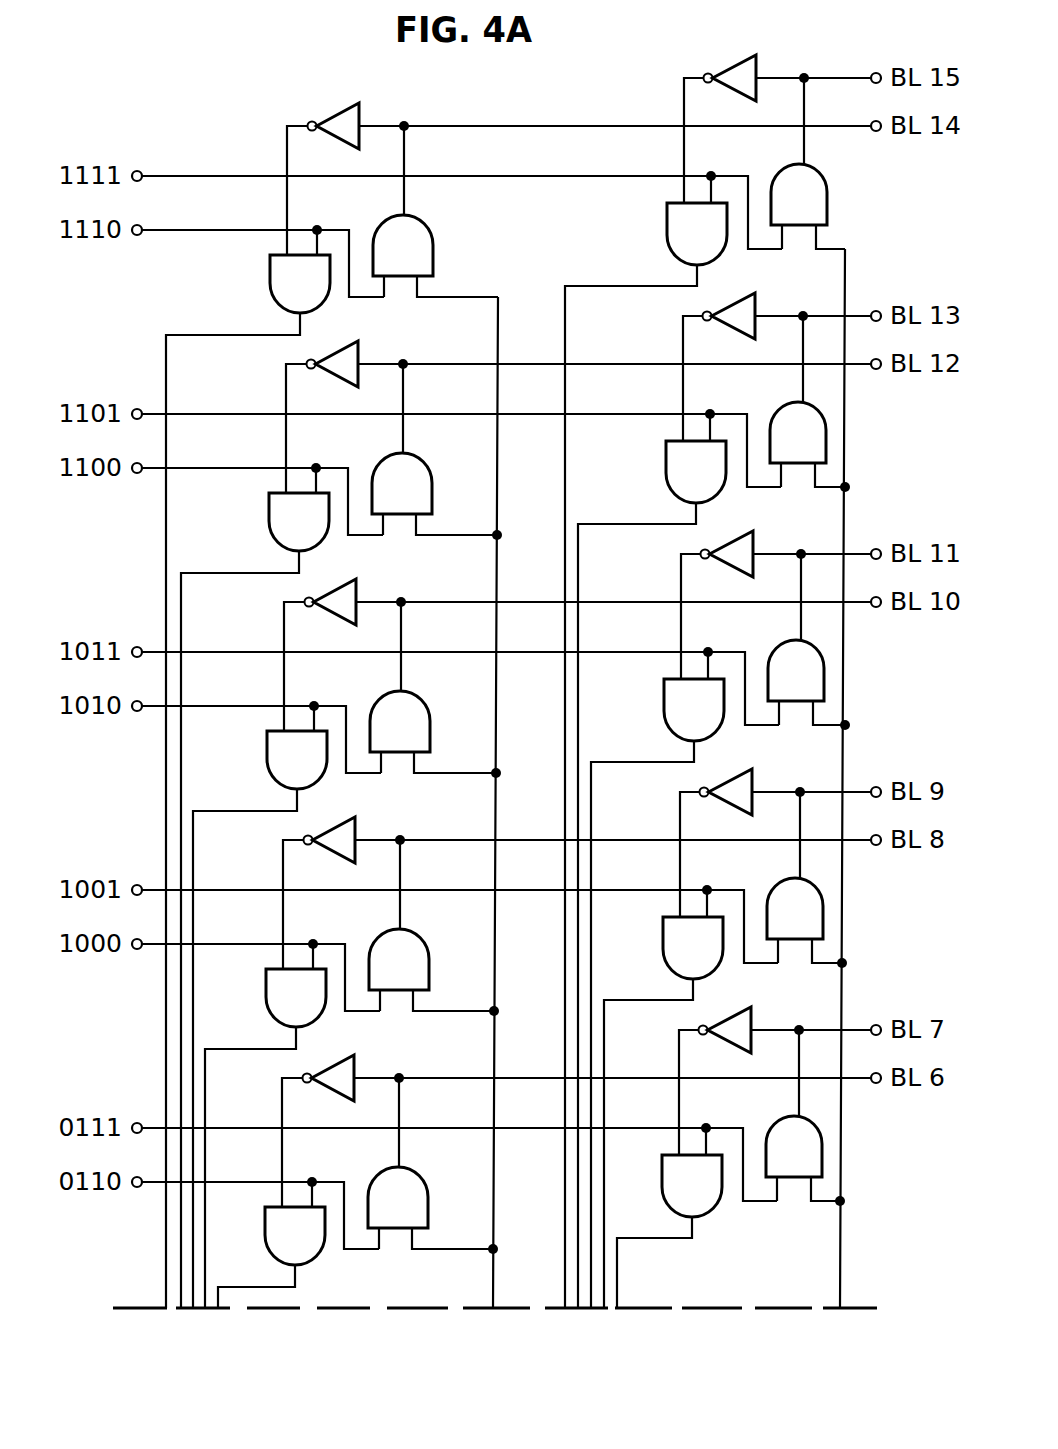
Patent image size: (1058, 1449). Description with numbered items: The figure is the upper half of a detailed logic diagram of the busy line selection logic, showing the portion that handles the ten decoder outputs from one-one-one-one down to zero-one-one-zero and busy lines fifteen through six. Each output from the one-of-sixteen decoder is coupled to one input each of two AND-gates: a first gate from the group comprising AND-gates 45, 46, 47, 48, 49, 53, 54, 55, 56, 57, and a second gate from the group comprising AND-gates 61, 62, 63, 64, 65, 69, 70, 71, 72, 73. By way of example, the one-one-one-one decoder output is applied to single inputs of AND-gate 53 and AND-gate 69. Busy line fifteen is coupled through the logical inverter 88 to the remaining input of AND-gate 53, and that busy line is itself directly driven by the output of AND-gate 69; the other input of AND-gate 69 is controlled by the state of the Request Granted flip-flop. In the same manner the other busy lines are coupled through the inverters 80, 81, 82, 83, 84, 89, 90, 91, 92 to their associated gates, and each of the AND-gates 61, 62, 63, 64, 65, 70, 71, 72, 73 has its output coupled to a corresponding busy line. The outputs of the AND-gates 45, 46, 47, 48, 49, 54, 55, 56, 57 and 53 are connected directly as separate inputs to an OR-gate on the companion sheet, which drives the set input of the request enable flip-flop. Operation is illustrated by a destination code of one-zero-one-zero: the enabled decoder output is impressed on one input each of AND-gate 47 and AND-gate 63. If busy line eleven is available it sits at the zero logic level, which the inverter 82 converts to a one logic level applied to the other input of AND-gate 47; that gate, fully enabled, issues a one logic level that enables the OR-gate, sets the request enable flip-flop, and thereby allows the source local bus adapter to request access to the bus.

The AND-gate 45 is at (272, 280).
The AND-gate 46 is at (271, 518).
The AND-gate 47 is at (270, 765).
The AND-gate 48 is at (268, 995).
The AND-gate 49 is at (310, 1256).
The AND-gate 53 is at (668, 230).
The AND-gate 54 is at (667, 470).
The AND-gate 55 is at (665, 712).
The AND-gate 56 is at (664, 942).
The AND-gate 57 is at (705, 1214).
The AND-gate 61 is at (430, 239).
The AND-gate 62 is at (426, 466).
The AND-gate 63 is at (424, 704).
The AND-gate 64 is at (423, 942).
The AND-gate 65 is at (422, 1180).
The AND-gate 69 is at (826, 208).
The AND-gate 70 is at (825, 433).
The AND-gate 71 is at (823, 678).
The AND-gate 72 is at (822, 920).
The AND-gate 73 is at (821, 1140).
The logical inverter 80 is at (339, 112).
The logical inverter 81 is at (355, 347).
The inverter 82 is at (353, 585).
The logical inverter 83 is at (352, 823).
The logical inverter 84 is at (351, 1061).
The logical inverter 88 is at (733, 68).
The logical inverter 89 is at (752, 299).
The logical inverter 90 is at (750, 537).
The logical inverter 91 is at (749, 775).
The logical inverter 92 is at (748, 1013).